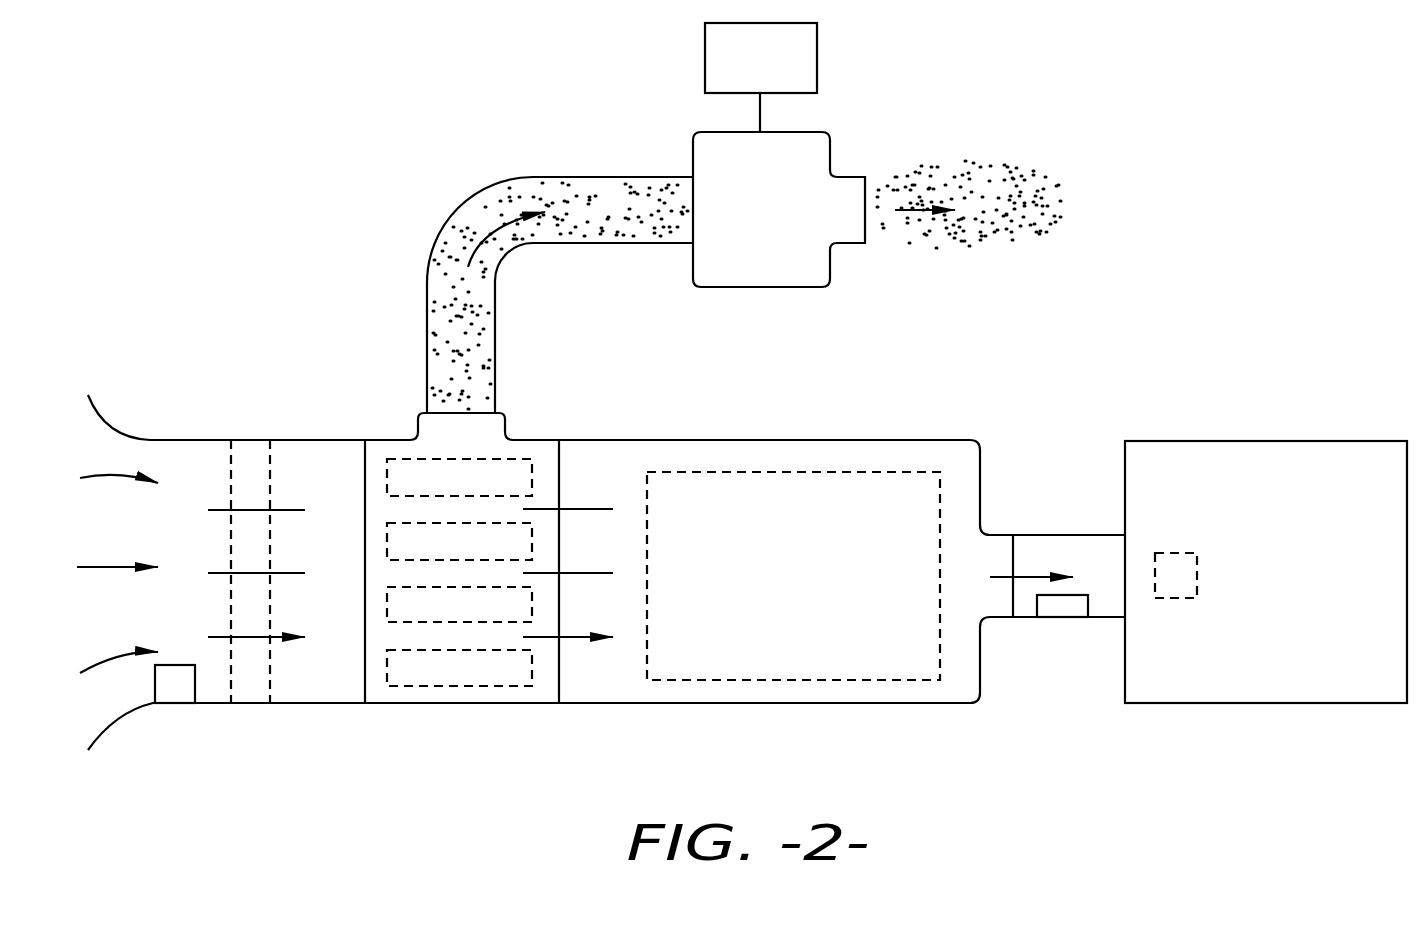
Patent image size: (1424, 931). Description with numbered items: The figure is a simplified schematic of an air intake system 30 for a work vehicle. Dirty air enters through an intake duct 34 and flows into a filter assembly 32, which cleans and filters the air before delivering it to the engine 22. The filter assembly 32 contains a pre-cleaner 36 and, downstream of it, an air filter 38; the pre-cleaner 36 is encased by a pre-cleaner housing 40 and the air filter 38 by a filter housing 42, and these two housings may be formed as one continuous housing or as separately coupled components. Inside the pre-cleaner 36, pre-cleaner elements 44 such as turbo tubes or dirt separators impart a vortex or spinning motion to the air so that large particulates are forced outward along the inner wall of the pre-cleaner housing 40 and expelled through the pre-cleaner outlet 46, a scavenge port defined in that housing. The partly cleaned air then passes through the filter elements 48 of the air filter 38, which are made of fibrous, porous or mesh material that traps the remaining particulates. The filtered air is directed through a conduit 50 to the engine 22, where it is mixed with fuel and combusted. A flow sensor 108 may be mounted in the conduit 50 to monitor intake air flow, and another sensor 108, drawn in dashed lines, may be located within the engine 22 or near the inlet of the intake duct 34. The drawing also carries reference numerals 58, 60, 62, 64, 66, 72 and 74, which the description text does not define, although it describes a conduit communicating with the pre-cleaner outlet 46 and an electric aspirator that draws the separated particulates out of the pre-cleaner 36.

The engine 22 is at (1250, 586).
The air intake system 30 is at (346, 176).
The filter assembly 32 is at (667, 398).
The intake duct 34 is at (145, 430).
The pre-cleaner 36 is at (428, 708).
The air filter 38 is at (866, 696).
The pre-cleaner housing 40 is at (510, 705).
The filter housing 42 is at (708, 705).
The pre-cleaner elements 44 is at (384, 530).
The pre-cleaner outlet 46 is at (510, 418).
The filter elements 48 is at (818, 472).
The conduit 50 is at (1025, 535).
The cleaning conduit 58 is at (496, 178).
The conduit inlet 60 is at (427, 390).
The conduit outlet 62 is at (648, 177).
The cleaning air blower 64 is at (744, 228).
The controller 66 is at (743, 78).
The inlet screen 72 is at (231, 458).
The silencer inlet 74 is at (647, 652).
The flow sensor 108 is at (178, 685).